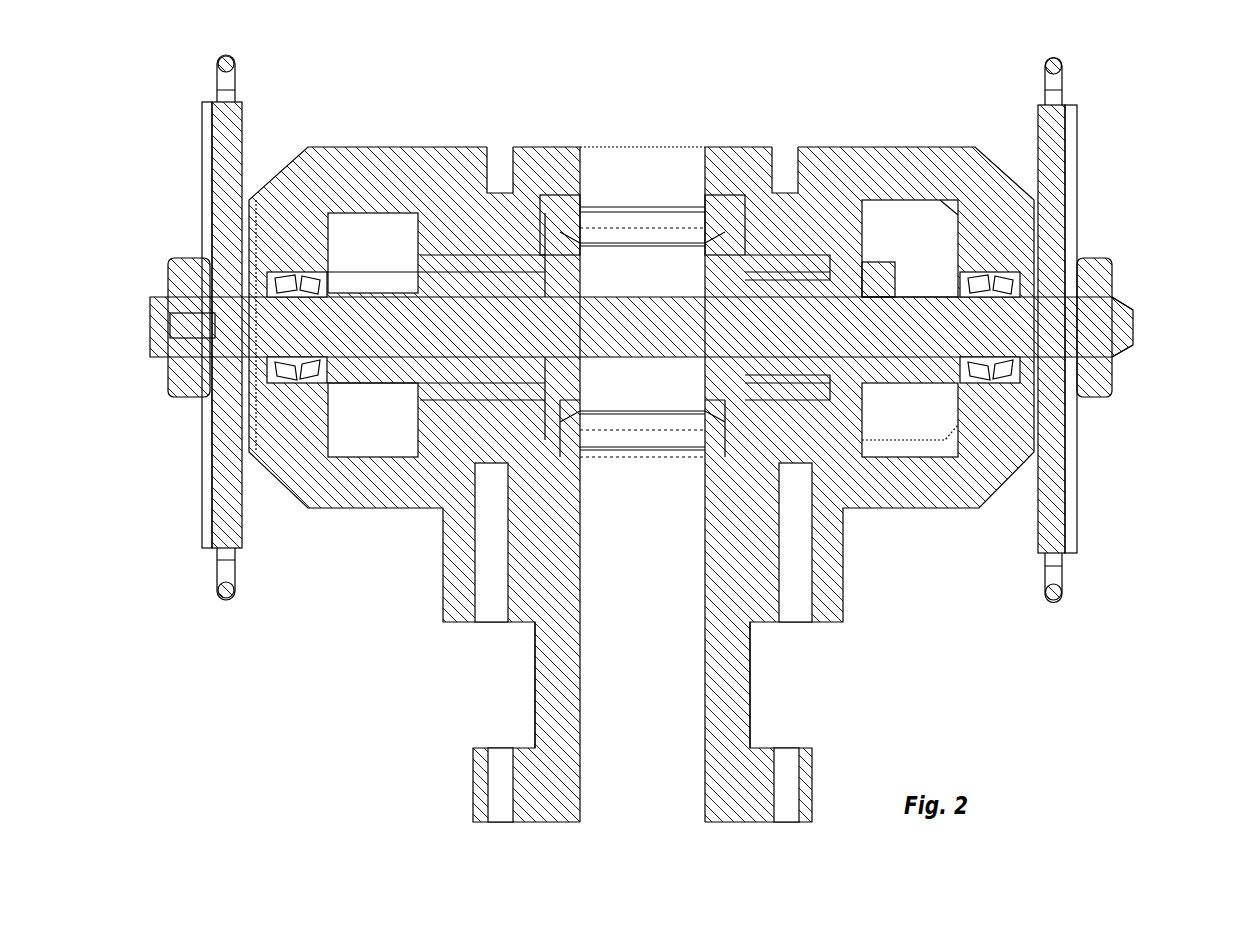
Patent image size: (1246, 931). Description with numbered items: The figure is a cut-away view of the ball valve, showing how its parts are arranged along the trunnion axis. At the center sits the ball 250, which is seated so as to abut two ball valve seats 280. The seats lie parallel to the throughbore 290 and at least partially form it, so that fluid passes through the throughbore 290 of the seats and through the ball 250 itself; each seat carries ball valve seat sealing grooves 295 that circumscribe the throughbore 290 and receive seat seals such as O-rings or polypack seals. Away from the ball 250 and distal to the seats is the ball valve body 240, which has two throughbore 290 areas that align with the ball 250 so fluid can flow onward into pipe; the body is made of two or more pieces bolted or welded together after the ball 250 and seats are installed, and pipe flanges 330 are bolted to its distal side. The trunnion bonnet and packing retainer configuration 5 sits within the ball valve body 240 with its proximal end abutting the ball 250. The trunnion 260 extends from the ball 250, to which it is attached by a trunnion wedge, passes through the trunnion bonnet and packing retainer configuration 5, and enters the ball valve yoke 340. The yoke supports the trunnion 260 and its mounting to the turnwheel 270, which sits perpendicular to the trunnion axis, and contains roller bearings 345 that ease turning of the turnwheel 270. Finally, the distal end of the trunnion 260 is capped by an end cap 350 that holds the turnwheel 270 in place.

The trunnion bonnet and packing retainer configuration 5 is at (877, 272).
The ball valve body 240 is at (808, 185).
The ball 250 is at (677, 272).
The trunnion 260 is at (1062, 330).
The turnwheel 270 is at (1048, 530).
The ball valve seats 280 is at (503, 190).
The throughbore 290 is at (642, 225).
The ball valve seat sealing grooves 295 is at (653, 435).
The pipe flanges 330 is at (752, 717).
The ball valve yoke 340 is at (958, 185).
The roller bearings 345 is at (1000, 372).
The end cap 350 is at (1118, 338).